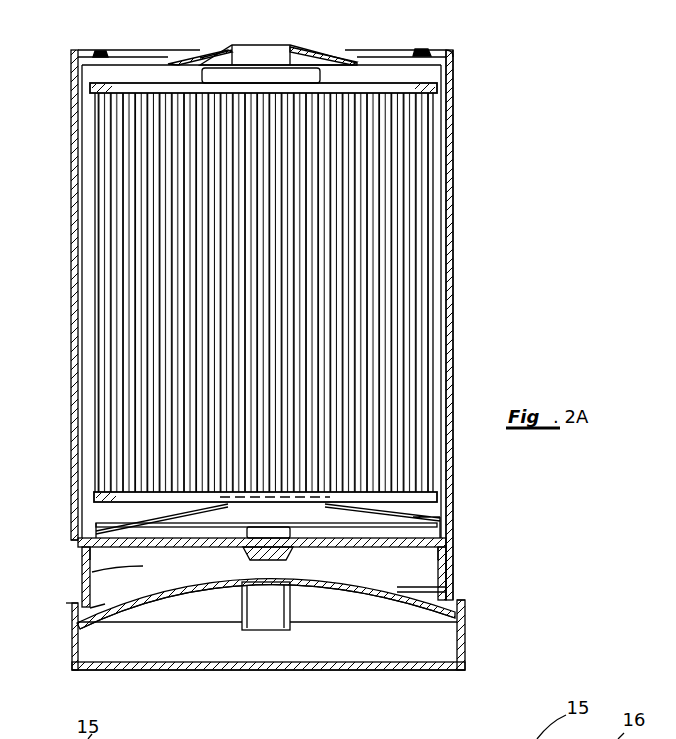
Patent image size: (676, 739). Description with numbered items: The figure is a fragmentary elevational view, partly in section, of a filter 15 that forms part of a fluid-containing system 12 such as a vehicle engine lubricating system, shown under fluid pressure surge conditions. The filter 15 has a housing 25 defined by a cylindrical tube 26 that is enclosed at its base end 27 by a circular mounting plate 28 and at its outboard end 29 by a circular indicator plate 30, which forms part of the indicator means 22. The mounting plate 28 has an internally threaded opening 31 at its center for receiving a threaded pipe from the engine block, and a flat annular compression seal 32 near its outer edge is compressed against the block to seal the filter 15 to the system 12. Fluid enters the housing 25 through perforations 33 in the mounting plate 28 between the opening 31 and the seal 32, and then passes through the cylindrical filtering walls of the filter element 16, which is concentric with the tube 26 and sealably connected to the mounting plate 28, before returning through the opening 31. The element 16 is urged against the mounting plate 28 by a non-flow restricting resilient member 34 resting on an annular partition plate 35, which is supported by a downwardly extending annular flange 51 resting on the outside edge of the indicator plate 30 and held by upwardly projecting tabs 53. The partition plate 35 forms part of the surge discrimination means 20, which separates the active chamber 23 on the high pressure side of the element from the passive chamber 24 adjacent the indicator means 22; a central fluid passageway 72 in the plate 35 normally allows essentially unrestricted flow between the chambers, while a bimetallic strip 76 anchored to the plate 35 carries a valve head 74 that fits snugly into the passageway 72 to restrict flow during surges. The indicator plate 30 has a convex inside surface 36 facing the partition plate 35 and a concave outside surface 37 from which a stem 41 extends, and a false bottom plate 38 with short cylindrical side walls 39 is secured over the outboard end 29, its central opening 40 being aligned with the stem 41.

The fluid-containing system 12 is at (471, 610).
The filter 15 is at (458, 163).
The filter element 16 is at (395, 322).
The surge discrimination means 20 is at (107, 534).
The indicator means 22 is at (362, 596).
The active chamber 23 is at (259, 47).
The passive chamber 24 is at (400, 566).
The housing 25 is at (458, 207).
The cylindrical tube 26 is at (455, 270).
The base end 27 is at (455, 83).
The mounting plate 28 is at (445, 50).
The outboard end 29 is at (75, 600).
The indicator plate 30 is at (462, 597).
The internally threaded opening 31 is at (246, 48).
The compression seal 32 is at (101, 52).
The perforations 33 is at (167, 58).
The resilient member 34 is at (430, 510).
The partition plate 35 is at (87, 562).
The inside surface 36 is at (188, 588).
The outside surface 37 is at (205, 590).
The false bottom plate 38 is at (437, 667).
The cylindrical side walls 39 is at (466, 648).
The opening 40 is at (270, 667).
The stem 41 is at (262, 632).
The annular flange 51 is at (129, 565).
The tabs 53 is at (106, 608).
The fluid passageway 72 is at (292, 549).
The valve head 74 is at (263, 520).
The bimetallic strip 76 is at (385, 523).